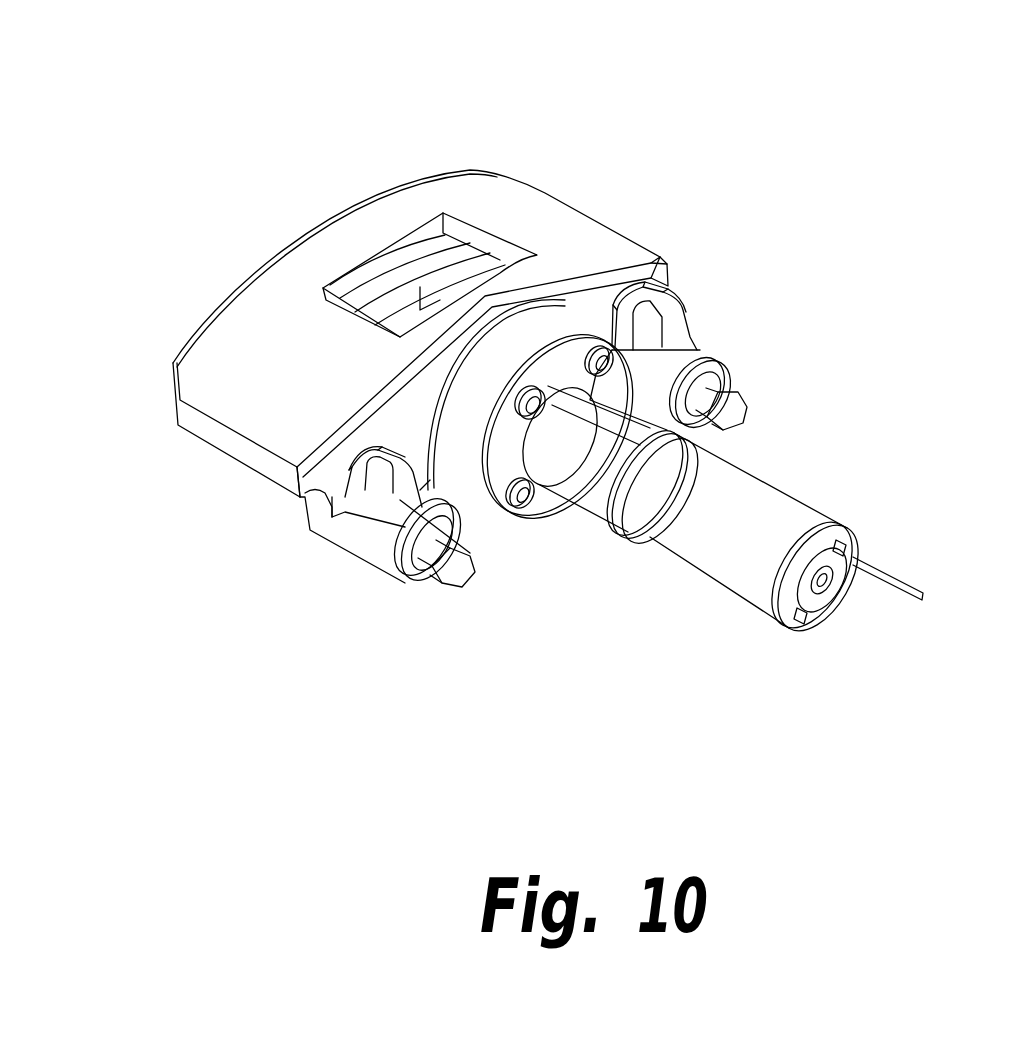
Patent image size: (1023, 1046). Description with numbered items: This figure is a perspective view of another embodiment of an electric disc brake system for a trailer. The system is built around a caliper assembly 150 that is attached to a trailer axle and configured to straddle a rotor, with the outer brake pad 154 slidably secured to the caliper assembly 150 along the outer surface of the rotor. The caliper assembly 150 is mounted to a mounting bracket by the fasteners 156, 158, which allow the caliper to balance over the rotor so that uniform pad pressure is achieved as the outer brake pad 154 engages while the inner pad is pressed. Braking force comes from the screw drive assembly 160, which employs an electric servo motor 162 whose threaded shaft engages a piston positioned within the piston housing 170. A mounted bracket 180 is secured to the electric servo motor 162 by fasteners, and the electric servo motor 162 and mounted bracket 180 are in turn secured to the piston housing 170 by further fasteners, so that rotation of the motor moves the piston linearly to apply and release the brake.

The caliper assembly 150 is at (595, 193).
The outer brake pad 154 is at (440, 262).
The fastener 156 is at (442, 573).
The fastener 158 is at (737, 380).
The screw drive assembly 160 is at (787, 437).
The electric servo motor 162 is at (820, 505).
The piston housing 170 is at (473, 485).
The mounted bracket 180 is at (555, 513).